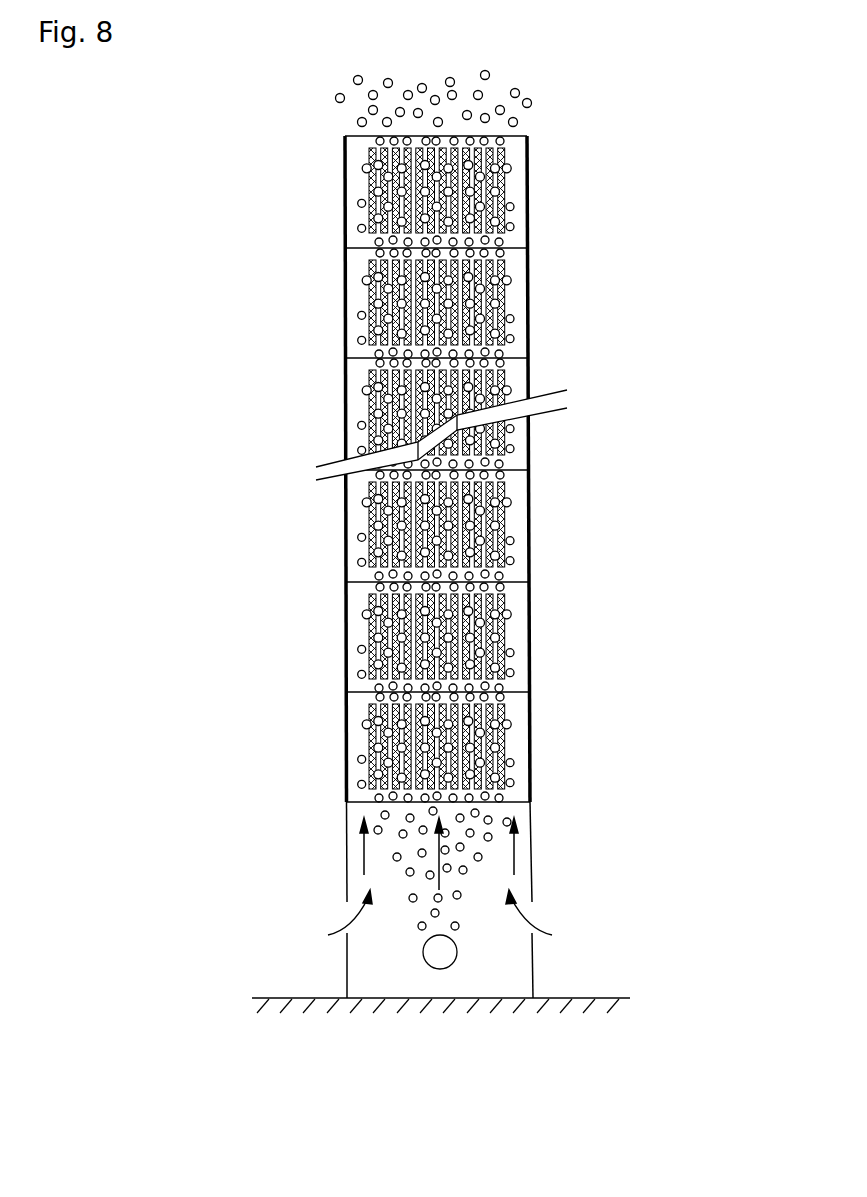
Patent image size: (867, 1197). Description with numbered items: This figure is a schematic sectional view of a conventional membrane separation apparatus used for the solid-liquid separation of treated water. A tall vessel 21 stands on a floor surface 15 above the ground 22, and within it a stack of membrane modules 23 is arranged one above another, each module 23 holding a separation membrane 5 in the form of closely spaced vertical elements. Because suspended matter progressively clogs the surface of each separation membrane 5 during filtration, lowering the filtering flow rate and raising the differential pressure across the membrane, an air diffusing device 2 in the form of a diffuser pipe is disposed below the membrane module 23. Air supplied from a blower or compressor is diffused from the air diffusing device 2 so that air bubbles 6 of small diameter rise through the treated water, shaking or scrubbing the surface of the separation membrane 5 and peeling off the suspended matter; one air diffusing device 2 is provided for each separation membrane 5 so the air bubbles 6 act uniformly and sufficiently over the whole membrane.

The air diffusing device 2 is at (457, 958).
The separation membrane 5 is at (503, 489).
The air bubbles 6 is at (507, 821).
The floor surface 15 is at (289, 998).
The tower body 21 is at (685, 580).
The ground 22 is at (270, 1044).
The membrane module 23 is at (600, 692).